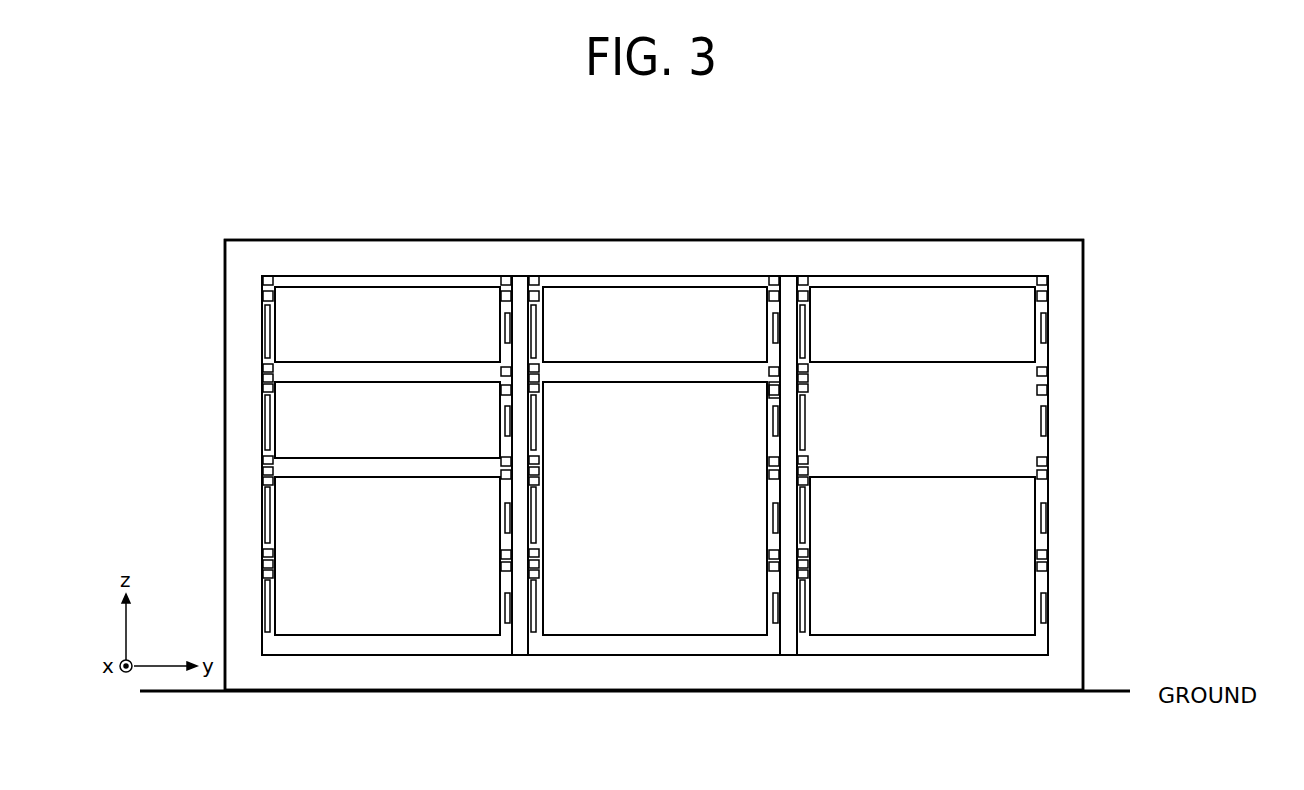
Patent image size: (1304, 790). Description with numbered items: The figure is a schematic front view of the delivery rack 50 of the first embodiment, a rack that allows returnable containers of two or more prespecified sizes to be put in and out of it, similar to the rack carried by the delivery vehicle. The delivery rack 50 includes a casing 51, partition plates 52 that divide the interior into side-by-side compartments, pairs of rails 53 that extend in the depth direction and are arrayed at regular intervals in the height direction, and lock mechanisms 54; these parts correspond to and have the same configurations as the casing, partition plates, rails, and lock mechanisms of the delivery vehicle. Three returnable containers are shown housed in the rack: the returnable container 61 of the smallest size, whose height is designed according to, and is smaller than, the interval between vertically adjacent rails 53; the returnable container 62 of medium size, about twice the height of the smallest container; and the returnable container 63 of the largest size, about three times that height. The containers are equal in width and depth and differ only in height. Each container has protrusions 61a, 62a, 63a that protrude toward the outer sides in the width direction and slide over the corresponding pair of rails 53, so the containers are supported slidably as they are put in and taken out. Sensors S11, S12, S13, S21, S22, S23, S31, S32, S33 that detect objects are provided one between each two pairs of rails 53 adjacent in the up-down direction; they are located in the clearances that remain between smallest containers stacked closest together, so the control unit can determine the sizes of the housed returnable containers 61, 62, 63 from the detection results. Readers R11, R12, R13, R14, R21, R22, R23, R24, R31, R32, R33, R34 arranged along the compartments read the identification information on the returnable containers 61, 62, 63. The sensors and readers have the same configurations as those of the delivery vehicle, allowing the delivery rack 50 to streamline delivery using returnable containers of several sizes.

The delivery rack 50 is at (1081, 210).
The casing 51 is at (307, 247).
The partition plates 52 is at (522, 278).
The rails 53 is at (1047, 302).
The lock mechanisms 54 is at (1047, 282).
The returnable container 61 is at (402, 339).
The protrusion 61a is at (265, 291).
The returnable container 62 is at (402, 569).
The protrusion 62a is at (265, 480).
The returnable container 63 is at (667, 543).
The protrusion 63a is at (782, 387).
The sensor S11 is at (265, 368).
The sensor S12 is at (265, 460).
The sensor S13 is at (265, 553).
The sensor S21 is at (535, 368).
The sensor S22 is at (535, 460).
The sensor S23 is at (535, 557).
The sensor S31 is at (805, 368).
The sensor S32 is at (805, 462).
The sensor S33 is at (805, 557).
The reader R11 is at (505, 326).
The reader R12 is at (505, 419).
The reader R13 is at (505, 516).
The reader R14 is at (505, 606).
The reader R21 is at (773, 328).
The reader R22 is at (773, 421).
The reader R23 is at (773, 516).
The reader R24 is at (773, 606).
The reader R31 is at (1041, 328).
The reader R32 is at (1041, 421).
The reader R33 is at (1041, 516).
The reader R34 is at (1041, 606).